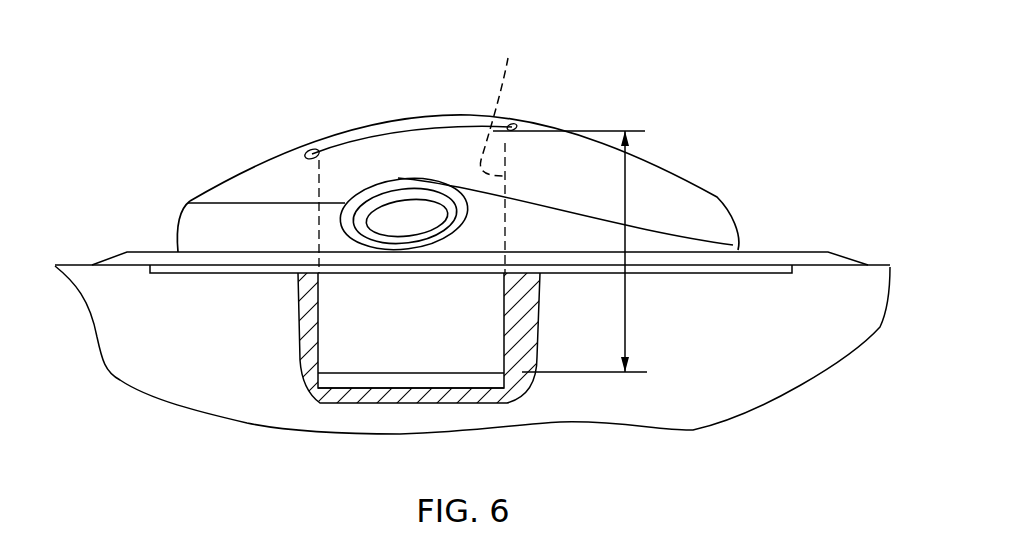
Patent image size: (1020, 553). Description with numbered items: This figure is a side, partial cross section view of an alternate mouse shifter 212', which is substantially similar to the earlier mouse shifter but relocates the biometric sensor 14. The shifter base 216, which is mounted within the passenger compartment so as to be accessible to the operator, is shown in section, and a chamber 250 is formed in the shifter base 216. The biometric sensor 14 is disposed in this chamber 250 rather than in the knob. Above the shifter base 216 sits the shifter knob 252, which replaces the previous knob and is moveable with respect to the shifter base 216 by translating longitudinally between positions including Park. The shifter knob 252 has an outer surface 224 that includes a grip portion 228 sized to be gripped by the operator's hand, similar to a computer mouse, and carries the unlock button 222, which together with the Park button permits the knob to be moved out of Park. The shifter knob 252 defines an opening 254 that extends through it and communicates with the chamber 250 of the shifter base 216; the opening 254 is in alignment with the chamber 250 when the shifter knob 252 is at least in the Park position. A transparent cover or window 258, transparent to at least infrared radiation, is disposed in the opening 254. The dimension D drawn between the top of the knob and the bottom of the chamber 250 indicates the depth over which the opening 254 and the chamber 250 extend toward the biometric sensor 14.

The mouse shifter 212' is at (458, 180).
The outer surface 224 is at (253, 163).
The window 258 is at (425, 133).
The opening 254 is at (501, 102).
The grip portion 228 is at (223, 198).
The shifter knob 252 is at (703, 192).
The unlock button 222 is at (408, 225).
The chamber 250 is at (320, 320).
The biometric sensor 14 is at (398, 378).
The shifter base 216 is at (843, 315).
The depth D is at (625, 293).